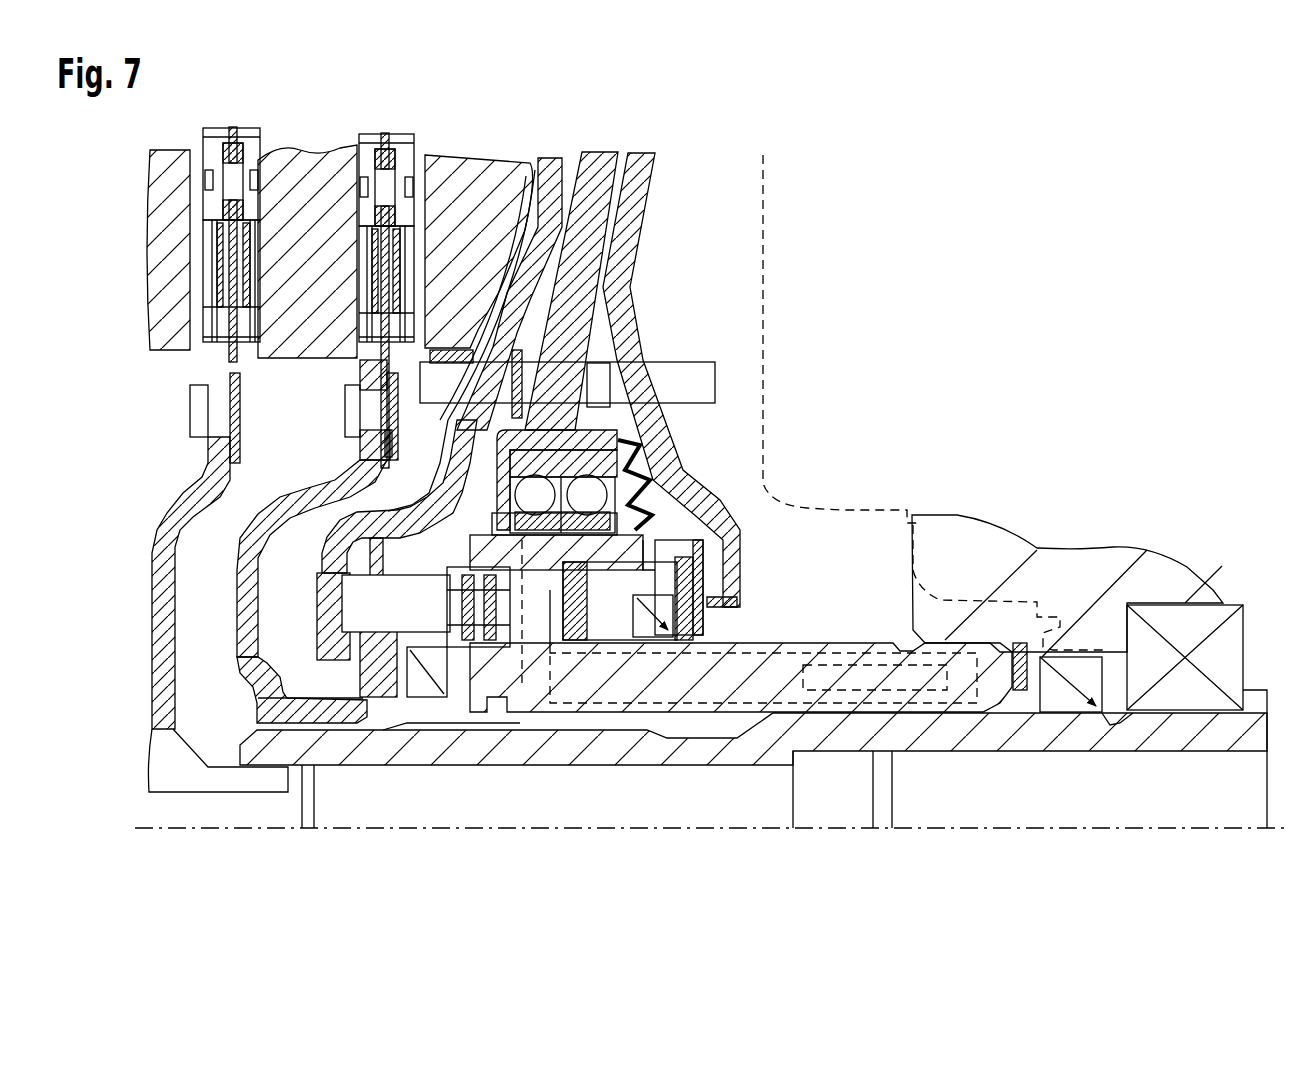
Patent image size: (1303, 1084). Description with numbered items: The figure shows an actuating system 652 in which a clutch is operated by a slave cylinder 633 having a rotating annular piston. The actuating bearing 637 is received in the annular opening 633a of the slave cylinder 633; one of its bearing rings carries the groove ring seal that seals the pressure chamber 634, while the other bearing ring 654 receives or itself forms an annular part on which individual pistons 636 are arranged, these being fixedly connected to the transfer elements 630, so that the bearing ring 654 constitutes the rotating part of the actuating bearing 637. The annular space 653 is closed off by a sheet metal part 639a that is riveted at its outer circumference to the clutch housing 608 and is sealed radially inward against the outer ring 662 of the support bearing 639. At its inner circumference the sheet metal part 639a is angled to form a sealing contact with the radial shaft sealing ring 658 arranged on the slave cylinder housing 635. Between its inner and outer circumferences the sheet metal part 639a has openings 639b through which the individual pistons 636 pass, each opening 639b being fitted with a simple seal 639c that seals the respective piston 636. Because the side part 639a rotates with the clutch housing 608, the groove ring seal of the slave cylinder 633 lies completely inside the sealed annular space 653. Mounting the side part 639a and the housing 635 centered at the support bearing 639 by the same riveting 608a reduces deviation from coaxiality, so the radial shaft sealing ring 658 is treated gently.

The clutch housing 608 is at (600, 342).
The riveting 608a is at (695, 382).
The actuating system 652 is at (1054, 214).
The outer ring of the support bearing 662 is at (630, 293).
The support bearing 639 is at (603, 425).
The pressure chamber 634 is at (645, 468).
The slave cylinder housing 635 is at (690, 512).
The annular opening 633a is at (470, 425).
The annular space 653 is at (403, 557).
The slave cylinder 633 is at (423, 563).
The transfer elements 630 is at (335, 583).
The openings 639b is at (347, 633).
The sheet metal part 639a is at (393, 705).
The seal 639c is at (390, 700).
The individual pistons 636 is at (415, 693).
The radial shaft sealing ring 658 is at (470, 605).
The bearing ring 654 is at (540, 620).
The actuating bearing 637 is at (507, 633).